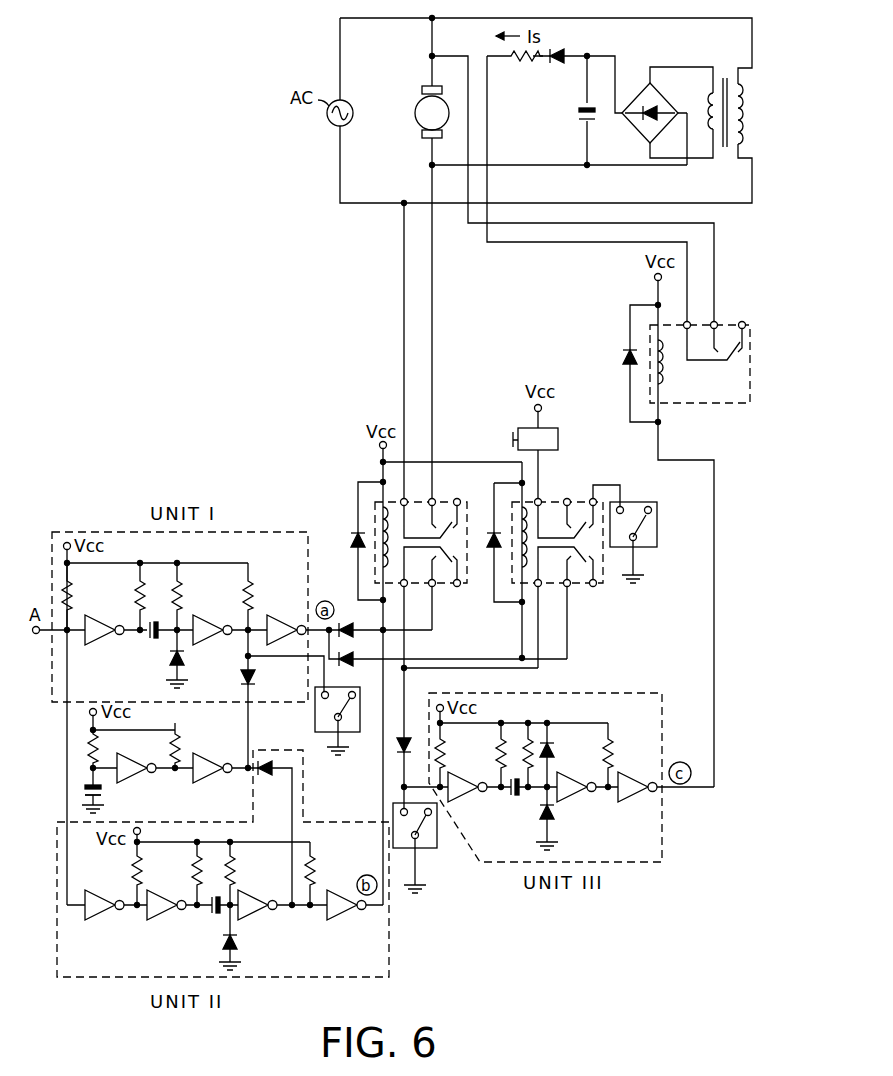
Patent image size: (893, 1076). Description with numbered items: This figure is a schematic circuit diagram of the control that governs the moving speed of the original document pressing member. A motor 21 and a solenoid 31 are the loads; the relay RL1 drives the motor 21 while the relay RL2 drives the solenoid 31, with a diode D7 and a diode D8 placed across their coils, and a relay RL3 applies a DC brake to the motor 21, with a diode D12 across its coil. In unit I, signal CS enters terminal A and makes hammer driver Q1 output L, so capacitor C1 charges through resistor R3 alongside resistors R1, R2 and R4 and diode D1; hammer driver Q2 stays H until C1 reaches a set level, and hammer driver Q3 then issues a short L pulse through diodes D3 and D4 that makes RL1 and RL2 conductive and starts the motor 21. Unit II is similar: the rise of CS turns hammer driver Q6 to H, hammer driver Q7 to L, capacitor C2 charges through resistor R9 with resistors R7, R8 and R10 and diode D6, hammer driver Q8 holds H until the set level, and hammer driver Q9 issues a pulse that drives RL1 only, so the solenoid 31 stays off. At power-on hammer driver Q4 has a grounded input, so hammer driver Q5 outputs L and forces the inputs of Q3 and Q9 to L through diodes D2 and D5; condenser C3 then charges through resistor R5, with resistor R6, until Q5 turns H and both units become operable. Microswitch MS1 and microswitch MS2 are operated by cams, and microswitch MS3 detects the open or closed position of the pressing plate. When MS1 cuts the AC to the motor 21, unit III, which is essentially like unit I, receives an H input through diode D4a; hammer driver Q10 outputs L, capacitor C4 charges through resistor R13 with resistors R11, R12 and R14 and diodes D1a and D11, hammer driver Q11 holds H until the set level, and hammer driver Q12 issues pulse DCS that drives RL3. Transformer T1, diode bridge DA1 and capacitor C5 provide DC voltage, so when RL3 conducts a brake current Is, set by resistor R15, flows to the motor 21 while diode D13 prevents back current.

The motor 21 is at (414, 110).
The solenoid 31 is at (558, 437).
The resistor R1 is at (68, 597).
The resistor R2 is at (136, 598).
The resistor R3 is at (182, 598).
The resistor R4 is at (252, 595).
The resistor R5 is at (95, 745).
The resistor R6 is at (178, 747).
The resistor R7 is at (140, 871).
The resistor R8 is at (192, 876).
The resistor R9 is at (235, 875).
The resistor R10 is at (317, 873).
The resistor R11 is at (443, 753).
The resistor R12 is at (498, 760).
The resistor R13 is at (523, 748).
The resistor R14 is at (613, 753).
The resistor R15 is at (524, 73).
The hammer driver Q1 is at (98, 646).
The hammer driver Q2 is at (222, 610).
The hammer driver Q3 is at (290, 606).
The hammer driver Q4 is at (130, 778).
The hammer driver Q5 is at (210, 778).
The hammer driver Q6 is at (93, 922).
The hammer driver Q7 is at (162, 922).
The hammer driver Q8 is at (253, 915).
The hammer driver Q9 is at (350, 915).
The hammer driver Q10 is at (465, 797).
The hammer driver Q11 is at (572, 778).
The hammer driver Q12 is at (627, 803).
The capacitor C1 is at (151, 640).
The capacitor C2 is at (213, 915).
The condenser C3 is at (104, 790).
The capacitor C4 is at (513, 803).
The capacitor C5 is at (577, 113).
The diode D1 is at (187, 657).
The diode D1a is at (551, 760).
The diode D2 is at (257, 678).
The diode D3 is at (347, 622).
The diode D4 is at (349, 664).
The diode D4a is at (410, 738).
The diode D5 is at (263, 777).
The diode D6 is at (238, 943).
The diode D7 is at (351, 533).
The diode D8 is at (494, 590).
The diode D11 is at (556, 813).
The diode D12 is at (624, 356).
The diode D13 is at (561, 53).
The diode bridge DA1 is at (669, 104).
The transformer T1 is at (725, 74).
The relay RL1 is at (445, 500).
The relay RL2 is at (592, 598).
The relay RL3 is at (690, 405).
The microswitch MS1 is at (437, 848).
The microswitch MS2 is at (642, 502).
The microswitch MS3 is at (315, 717).